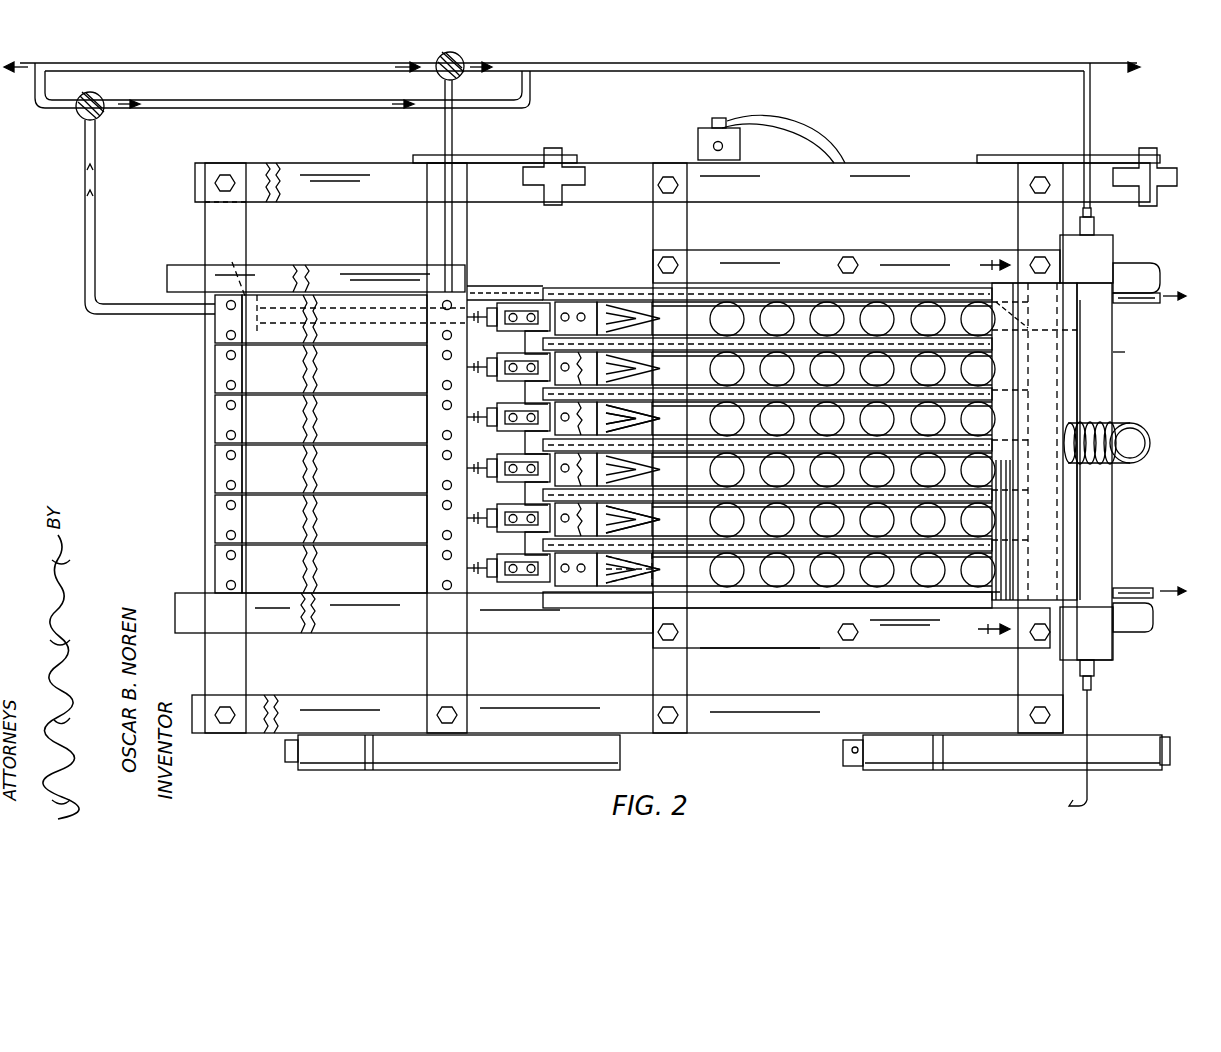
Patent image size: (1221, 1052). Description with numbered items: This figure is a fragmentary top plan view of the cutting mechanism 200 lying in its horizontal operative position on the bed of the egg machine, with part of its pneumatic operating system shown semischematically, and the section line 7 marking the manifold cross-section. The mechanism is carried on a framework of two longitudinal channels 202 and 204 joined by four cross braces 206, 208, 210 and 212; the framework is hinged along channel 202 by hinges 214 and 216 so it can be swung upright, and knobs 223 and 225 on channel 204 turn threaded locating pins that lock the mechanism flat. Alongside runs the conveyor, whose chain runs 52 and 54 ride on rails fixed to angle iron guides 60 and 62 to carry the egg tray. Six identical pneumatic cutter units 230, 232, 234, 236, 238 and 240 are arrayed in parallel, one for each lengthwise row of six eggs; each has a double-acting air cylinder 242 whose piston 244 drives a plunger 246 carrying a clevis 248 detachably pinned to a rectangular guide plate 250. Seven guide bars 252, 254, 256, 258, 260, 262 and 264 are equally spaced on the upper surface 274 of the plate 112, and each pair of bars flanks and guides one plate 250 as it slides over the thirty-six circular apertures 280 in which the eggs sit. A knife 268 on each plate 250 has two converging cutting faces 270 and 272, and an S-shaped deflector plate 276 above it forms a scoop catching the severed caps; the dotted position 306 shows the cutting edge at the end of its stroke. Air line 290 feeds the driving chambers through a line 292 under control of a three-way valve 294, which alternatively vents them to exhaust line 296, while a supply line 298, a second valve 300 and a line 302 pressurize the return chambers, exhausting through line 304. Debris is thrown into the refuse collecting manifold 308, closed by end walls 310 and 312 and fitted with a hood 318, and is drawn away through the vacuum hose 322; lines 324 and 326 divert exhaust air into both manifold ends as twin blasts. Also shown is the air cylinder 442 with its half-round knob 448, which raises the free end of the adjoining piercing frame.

The chain run 52 is at (1129, 580).
The chain run 54 is at (1141, 303).
The angle iron guide 60 is at (1150, 614).
The angle iron guide 62 is at (1148, 276).
The plate 112 is at (804, 649).
The cutting mechanism 200 is at (1128, 352).
The longitudinal channel 202 is at (719, 733).
The longitudinal channel 204 is at (879, 163).
The cross brace 206 is at (246, 660).
The cross brace 208 is at (427, 660).
The cross brace 210 is at (653, 660).
The cross brace 212 is at (1018, 663).
The hinge 214 is at (946, 775).
The hinge 216 is at (464, 773).
The knob 223 is at (552, 148).
The knob 225 is at (1150, 148).
The cutter unit 230 is at (212, 337).
The cutter unit 232 is at (212, 372).
The cutter unit 234 is at (212, 425).
The cutter unit 236 is at (212, 475).
The cutter unit 238 is at (212, 522).
The cutter unit 240 is at (212, 568).
The air cylinder 242 is at (284, 292).
The piston 244 is at (225, 268).
The plunger 246 is at (478, 300).
The clevis 248 is at (518, 300).
The guide plate 250 is at (555, 300).
The guide bar 252 is at (720, 284).
The guide bar 254 is at (754, 342).
The guide bar 256 is at (754, 392).
The guide bar 258 is at (754, 443).
The guide bar 260 is at (754, 493).
The guide bar 262 is at (754, 543).
The guide bar 264 is at (740, 608).
The knife 268 is at (644, 488).
The cutting face 270 is at (646, 409).
The cutting face 272 is at (646, 427).
The upper surface 274 is at (895, 650).
The deflector plate 276 is at (640, 564).
The circular aperture 280 is at (845, 591).
The air line 290 is at (84, 274).
The line 292 is at (40, 104).
The pilot operated three-way valve 294 is at (102, 120).
The exhaust line 296 is at (242, 108).
The line 298 is at (312, 62).
The pilot actuated three-way valve 300 is at (436, 72).
The line 302 is at (444, 138).
The exhaust line 304 is at (487, 62).
The dotted line position of cutting edge 306 is at (1072, 322).
The refuse collecting manifold 308 is at (1112, 506).
The end wall 310 is at (1113, 244).
The end wall 312 is at (1098, 662).
The hood 318 is at (1080, 390).
The vacuum hose 322 is at (1137, 440).
The line 324 is at (615, 71).
The line 326 is at (1082, 806).
The air cylinder 442 is at (694, 134).
The half-round knob 448 is at (708, 146).
The section line 7- 7 is at (984, 447).